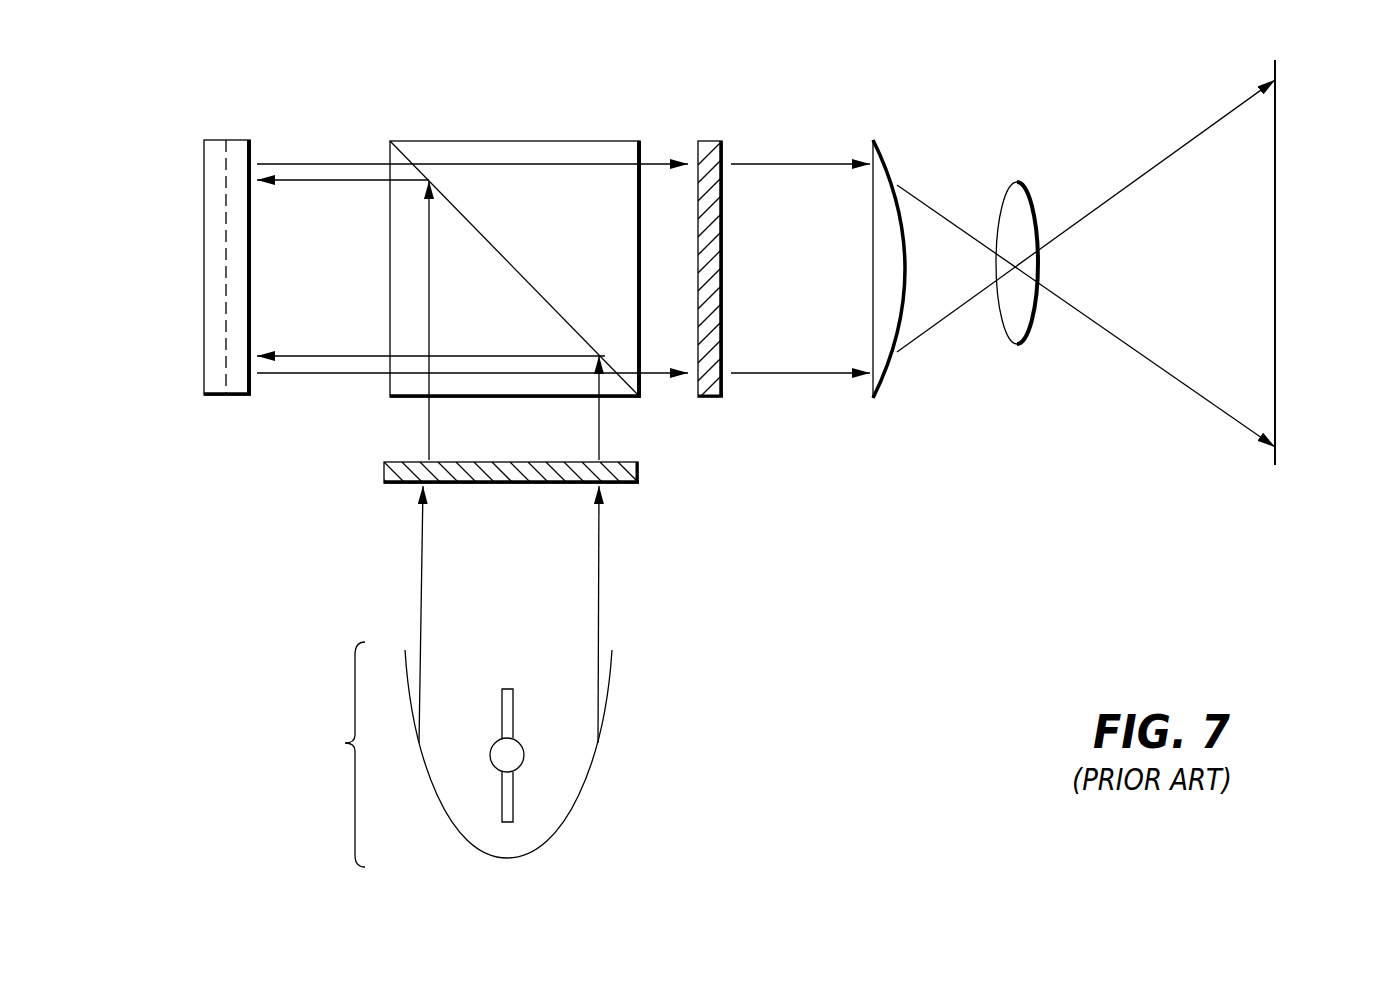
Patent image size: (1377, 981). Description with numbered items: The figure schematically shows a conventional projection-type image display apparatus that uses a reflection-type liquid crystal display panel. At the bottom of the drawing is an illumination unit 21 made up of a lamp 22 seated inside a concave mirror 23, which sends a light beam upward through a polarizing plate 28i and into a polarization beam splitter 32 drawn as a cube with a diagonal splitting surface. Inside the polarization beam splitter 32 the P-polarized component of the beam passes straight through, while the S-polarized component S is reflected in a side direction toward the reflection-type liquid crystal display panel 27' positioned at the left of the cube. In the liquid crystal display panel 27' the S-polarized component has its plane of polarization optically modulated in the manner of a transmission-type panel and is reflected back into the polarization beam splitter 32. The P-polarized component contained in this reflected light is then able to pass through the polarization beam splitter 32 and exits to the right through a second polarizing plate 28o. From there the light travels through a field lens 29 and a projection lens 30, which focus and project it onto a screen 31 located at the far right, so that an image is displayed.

The illumination unit 21 is at (345, 743).
The lamp 22 is at (518, 742).
The concave mirror 23 is at (592, 765).
The reflection-type liquid crystal display panel 27' is at (250, 222).
The polarizing plate 28i is at (384, 470).
The polarizing plate 28o is at (710, 140).
The field lens 29 is at (892, 160).
The projection lens 30 is at (1017, 183).
The screen 31 is at (1275, 263).
The polarization beam splitter 32 is at (515, 140).
The S-polarized light component S is at (318, 180).